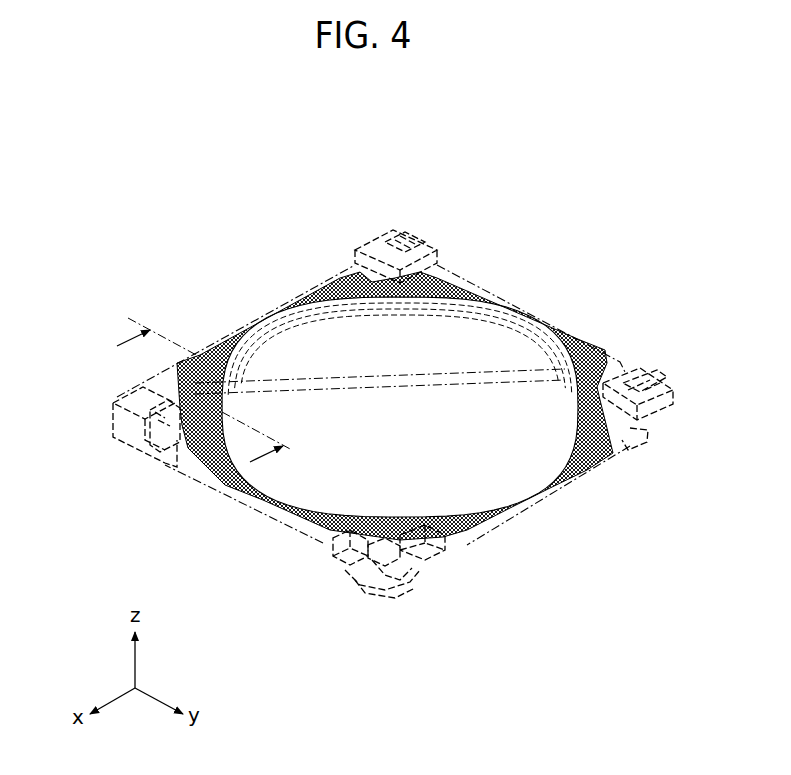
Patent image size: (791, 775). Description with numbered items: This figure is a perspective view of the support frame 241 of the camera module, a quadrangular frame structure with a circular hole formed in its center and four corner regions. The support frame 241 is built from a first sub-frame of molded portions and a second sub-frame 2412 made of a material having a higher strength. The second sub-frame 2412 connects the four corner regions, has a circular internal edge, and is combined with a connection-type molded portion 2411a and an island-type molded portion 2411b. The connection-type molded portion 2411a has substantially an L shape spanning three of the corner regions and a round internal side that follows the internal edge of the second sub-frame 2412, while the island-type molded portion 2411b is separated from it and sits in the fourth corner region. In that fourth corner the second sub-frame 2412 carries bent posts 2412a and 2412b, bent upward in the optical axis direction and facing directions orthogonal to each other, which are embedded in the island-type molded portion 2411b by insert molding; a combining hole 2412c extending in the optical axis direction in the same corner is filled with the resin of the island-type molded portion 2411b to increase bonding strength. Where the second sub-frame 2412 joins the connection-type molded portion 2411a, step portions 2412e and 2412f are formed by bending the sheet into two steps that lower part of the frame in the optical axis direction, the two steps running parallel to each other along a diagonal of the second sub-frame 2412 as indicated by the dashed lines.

The support frame 241 is at (363, 433).
The connection-type molded portion 2411a is at (240, 318).
The island-type molded portion 2411b is at (360, 590).
The second sub-frame 2412 is at (503, 517).
The bent post 2412a is at (403, 566).
The bent post 2412b is at (368, 576).
The combining hole 2412c is at (383, 522).
The step portion 2412e is at (180, 385).
The step portion 2412f is at (623, 373).